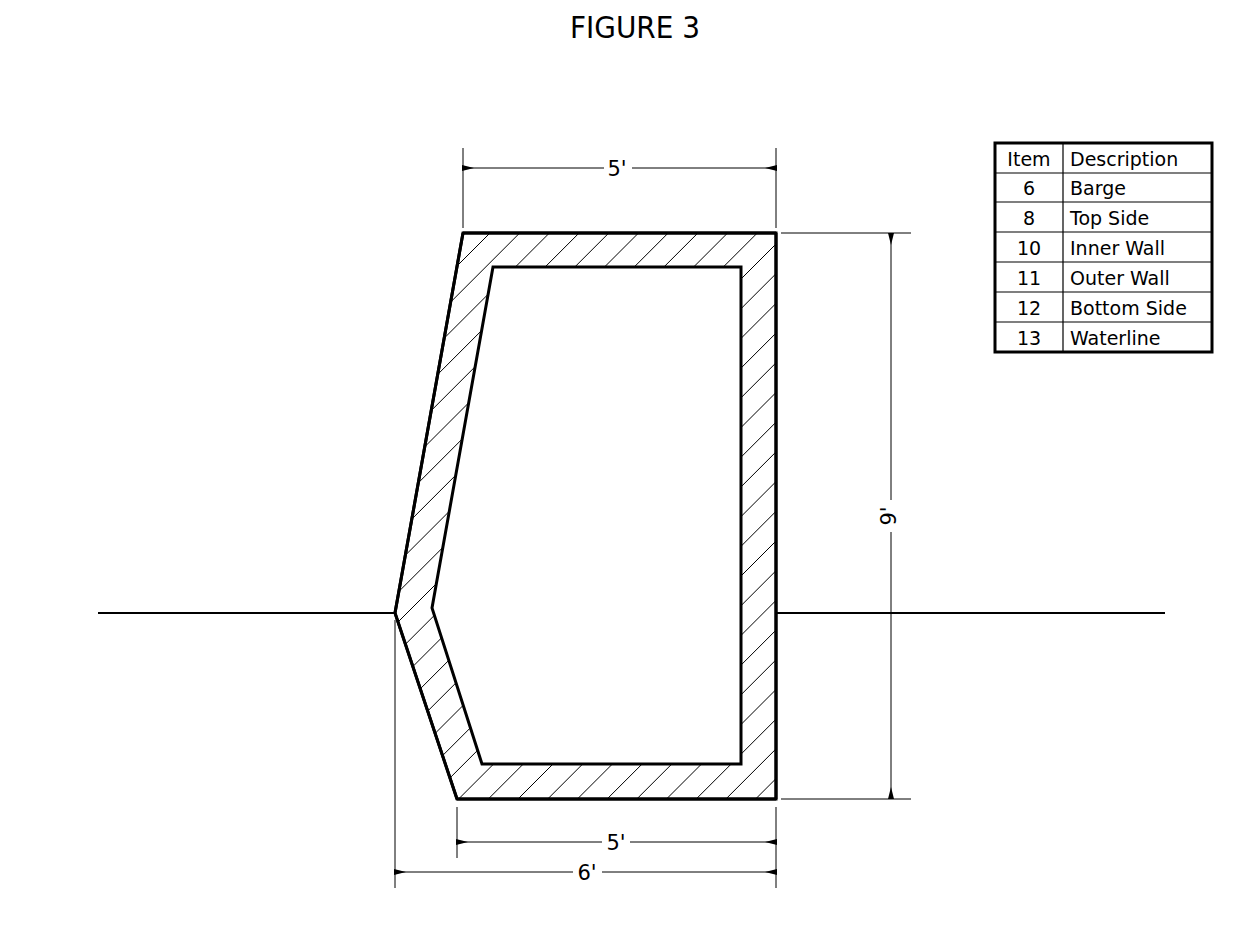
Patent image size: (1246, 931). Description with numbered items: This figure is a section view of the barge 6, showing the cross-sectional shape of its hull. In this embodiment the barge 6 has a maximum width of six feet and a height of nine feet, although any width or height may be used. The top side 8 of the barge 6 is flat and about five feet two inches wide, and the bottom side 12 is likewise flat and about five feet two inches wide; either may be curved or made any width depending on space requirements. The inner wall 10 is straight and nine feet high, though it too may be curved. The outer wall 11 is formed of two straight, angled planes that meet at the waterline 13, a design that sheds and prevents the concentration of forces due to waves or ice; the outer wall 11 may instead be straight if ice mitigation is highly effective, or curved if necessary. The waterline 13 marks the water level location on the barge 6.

The barge 6 is at (450, 310).
The top side 8 is at (666, 232).
The inner wall 10 is at (780, 412).
The outer wall 11 is at (425, 435).
The bottom side 12 is at (521, 802).
The waterline 13 is at (373, 612).